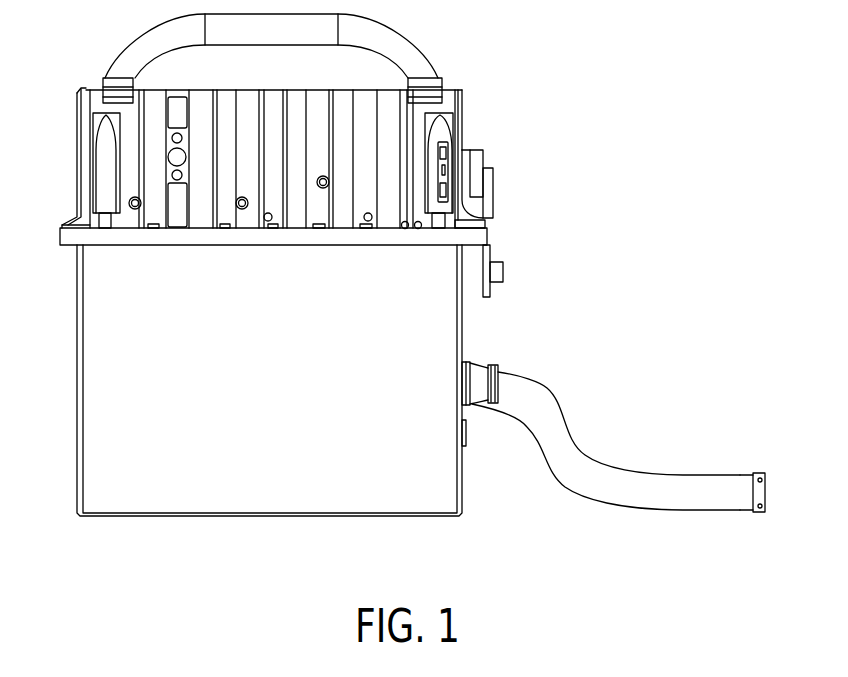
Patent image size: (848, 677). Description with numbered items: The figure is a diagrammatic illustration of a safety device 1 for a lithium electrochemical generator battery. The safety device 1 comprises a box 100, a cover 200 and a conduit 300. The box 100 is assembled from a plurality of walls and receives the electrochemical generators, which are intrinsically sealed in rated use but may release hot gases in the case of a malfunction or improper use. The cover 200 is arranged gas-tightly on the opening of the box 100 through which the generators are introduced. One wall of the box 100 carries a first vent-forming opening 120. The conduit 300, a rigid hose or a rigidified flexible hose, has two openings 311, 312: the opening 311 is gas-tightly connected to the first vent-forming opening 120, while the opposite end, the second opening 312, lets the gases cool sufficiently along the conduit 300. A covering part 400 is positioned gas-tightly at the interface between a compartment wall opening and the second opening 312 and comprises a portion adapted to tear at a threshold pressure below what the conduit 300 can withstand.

The safety device 1 is at (72, 80).
The box 100 is at (318, 485).
The first vent-forming opening 120 is at (490, 363).
The cover 200 is at (412, 116).
The conduit 300 is at (560, 393).
The first opening of the conduit 311 is at (472, 406).
The second opening of the conduit 312 is at (757, 513).
The covering part 400 is at (770, 468).